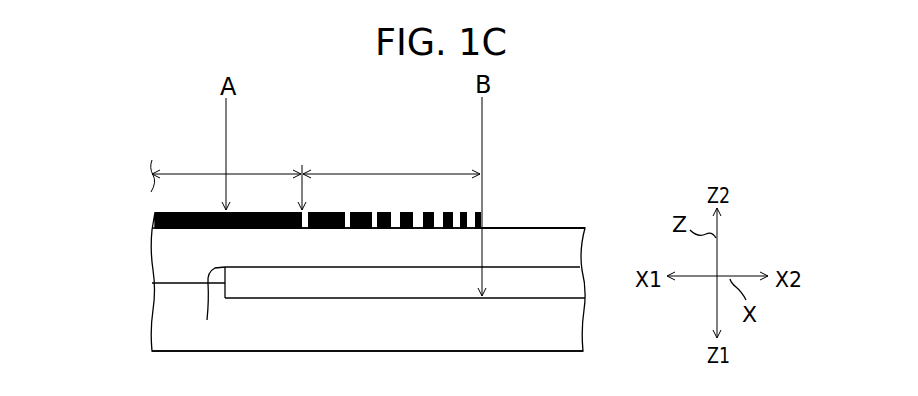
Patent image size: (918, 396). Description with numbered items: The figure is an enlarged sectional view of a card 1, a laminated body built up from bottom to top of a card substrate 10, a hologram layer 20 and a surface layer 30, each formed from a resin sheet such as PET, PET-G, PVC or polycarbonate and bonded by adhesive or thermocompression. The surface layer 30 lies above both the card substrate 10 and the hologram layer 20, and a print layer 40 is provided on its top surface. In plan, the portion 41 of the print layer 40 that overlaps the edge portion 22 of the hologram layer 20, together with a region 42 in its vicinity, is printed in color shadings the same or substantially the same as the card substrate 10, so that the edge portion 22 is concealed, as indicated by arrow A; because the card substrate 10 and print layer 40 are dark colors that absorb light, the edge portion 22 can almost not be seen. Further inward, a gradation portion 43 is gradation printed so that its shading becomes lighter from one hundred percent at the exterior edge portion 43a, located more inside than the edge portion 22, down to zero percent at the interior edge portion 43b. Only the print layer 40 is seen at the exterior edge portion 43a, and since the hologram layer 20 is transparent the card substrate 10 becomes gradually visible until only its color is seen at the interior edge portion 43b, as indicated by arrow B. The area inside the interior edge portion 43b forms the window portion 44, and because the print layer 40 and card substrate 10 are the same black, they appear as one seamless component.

The card 1 is at (146, 113).
The card substrate 10 is at (160, 322).
The hologram layer 20 is at (325, 289).
The edge portion of the hologram layer 22 is at (207, 320).
The surface layer 30 is at (165, 264).
The print layer 40 is at (153, 221).
The portion of the print layer 41 is at (207, 203).
The region in the vicinity 42 is at (298, 175).
The gradation portion 43 is at (425, 175).
The exterior edge portion 43a is at (306, 175).
The interior edge portion 43b is at (481, 153).
The window portion 44 is at (549, 212).